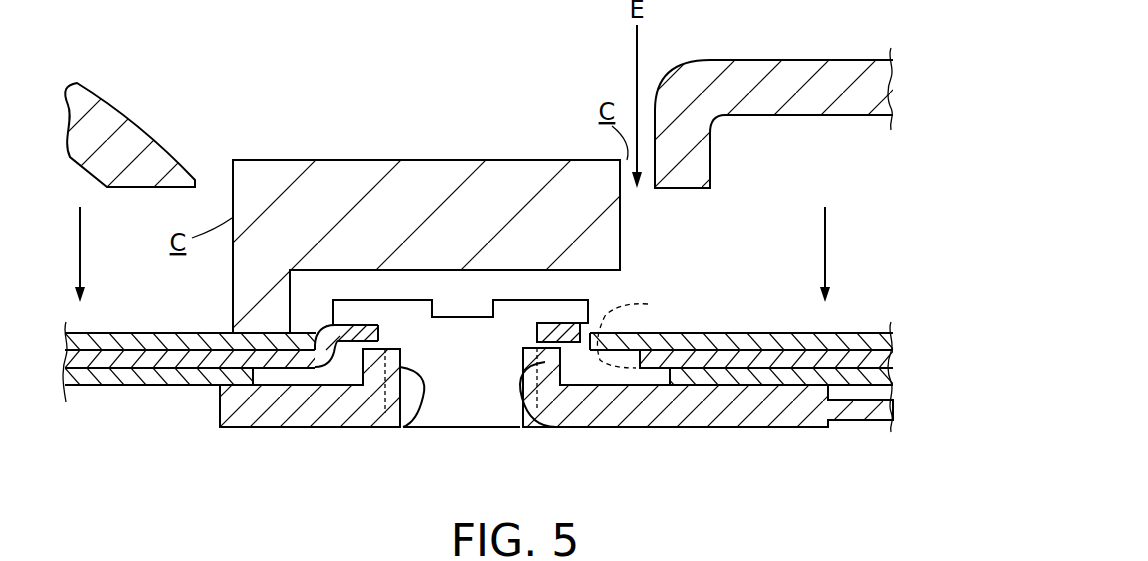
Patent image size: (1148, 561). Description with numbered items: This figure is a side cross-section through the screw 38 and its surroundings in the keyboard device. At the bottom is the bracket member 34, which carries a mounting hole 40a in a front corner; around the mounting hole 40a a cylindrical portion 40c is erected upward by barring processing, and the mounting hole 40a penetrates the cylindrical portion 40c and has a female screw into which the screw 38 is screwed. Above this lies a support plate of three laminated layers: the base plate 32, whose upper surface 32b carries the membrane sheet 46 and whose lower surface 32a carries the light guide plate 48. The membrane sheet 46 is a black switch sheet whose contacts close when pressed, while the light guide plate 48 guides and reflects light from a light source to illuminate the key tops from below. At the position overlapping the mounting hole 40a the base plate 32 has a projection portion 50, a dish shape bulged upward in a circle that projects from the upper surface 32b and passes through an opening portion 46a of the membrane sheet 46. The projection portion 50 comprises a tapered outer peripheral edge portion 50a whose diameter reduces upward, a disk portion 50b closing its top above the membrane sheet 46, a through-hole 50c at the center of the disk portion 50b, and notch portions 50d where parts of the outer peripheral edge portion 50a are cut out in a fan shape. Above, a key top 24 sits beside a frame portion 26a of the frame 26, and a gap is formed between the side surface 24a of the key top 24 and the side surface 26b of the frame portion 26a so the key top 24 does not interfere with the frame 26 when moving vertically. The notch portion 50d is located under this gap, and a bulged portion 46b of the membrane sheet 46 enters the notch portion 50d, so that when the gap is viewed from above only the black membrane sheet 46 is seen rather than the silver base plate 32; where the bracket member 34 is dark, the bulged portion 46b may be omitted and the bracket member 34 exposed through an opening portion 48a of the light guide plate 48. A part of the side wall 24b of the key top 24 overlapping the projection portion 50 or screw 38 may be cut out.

The key top 24 is at (80, 82).
The side surface of key top 24a is at (213, 186).
The side wall of key top 24b is at (712, 150).
The frame 26 is at (401, 159).
The frame portion 26a is at (375, 178).
The side surface of frame portion 26b is at (233, 208).
The base plate 32 is at (893, 360).
The lower surface of base plate 32a is at (805, 373).
The upper surface of base plate 32b is at (134, 348).
The bracket member 34 is at (312, 430).
The screw 38 is at (470, 404).
The mounting hole 40a is at (404, 428).
The cylindrical portion 40c is at (534, 426).
The membrane sheet 46 is at (893, 334).
The opening portion 46a is at (272, 388).
The bulged portion 46b is at (591, 341).
The light guide plate 48 is at (893, 386).
The opening portion of light guide plate 48a is at (652, 388).
The projection portion 50 is at (322, 320).
The outer peripheral edge portion 50a is at (290, 336).
The disk portion 50b is at (566, 322).
The through-hole 50c is at (382, 328).
The notch portion 50d is at (648, 325).